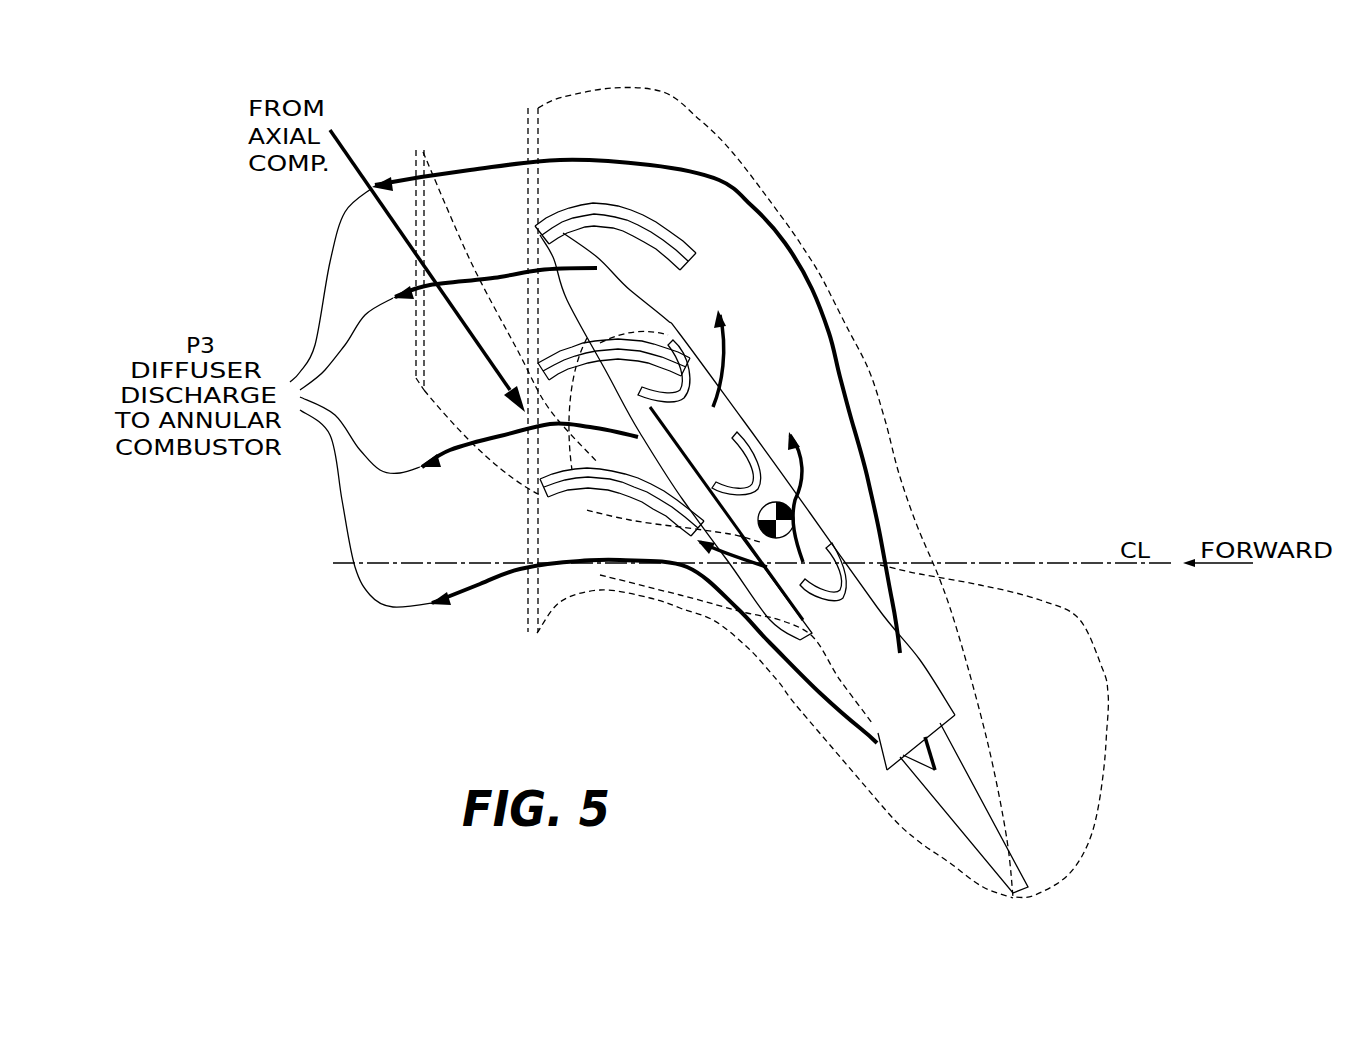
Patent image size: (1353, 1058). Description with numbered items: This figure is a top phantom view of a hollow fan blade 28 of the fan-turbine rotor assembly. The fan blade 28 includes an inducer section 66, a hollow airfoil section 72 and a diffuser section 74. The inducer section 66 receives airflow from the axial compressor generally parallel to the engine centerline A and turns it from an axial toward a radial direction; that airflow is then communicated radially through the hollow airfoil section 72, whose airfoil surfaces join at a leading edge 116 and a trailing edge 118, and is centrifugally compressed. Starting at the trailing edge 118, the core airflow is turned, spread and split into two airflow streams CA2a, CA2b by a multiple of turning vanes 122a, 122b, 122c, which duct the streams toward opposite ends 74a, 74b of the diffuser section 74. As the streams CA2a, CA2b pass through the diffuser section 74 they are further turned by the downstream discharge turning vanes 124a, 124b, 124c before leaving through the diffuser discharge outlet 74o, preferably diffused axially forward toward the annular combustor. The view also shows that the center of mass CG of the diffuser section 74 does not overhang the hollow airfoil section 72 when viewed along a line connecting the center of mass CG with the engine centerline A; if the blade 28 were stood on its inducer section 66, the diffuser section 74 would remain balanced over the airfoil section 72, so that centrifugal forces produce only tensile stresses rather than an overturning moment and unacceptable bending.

The fan blade 28 is at (1132, 372).
The inducer section 66 is at (430, 395).
The hollow airfoil section 72 is at (1082, 718).
The diffuser section 74 is at (750, 138).
The diffuser section end 74a is at (530, 638).
The diffuser section end 74b is at (538, 108).
The diffuser discharge outlet 74o is at (513, 225).
The leading edge 116 is at (673, 340).
The trailing edge 118 is at (1108, 690).
The turning vane 122a is at (880, 745).
The turning vane 122b is at (748, 410).
The turning vane 122c is at (772, 598).
The discharge turning vane 124a is at (547, 482).
The discharge turning vane 124b is at (602, 204).
The discharge turning vane 124c is at (585, 345).
The airflow stream CA2a is at (803, 678).
The airflow stream CA2b is at (870, 480).
The center of mass CG is at (796, 520).
The engine centerline A is at (1002, 563).